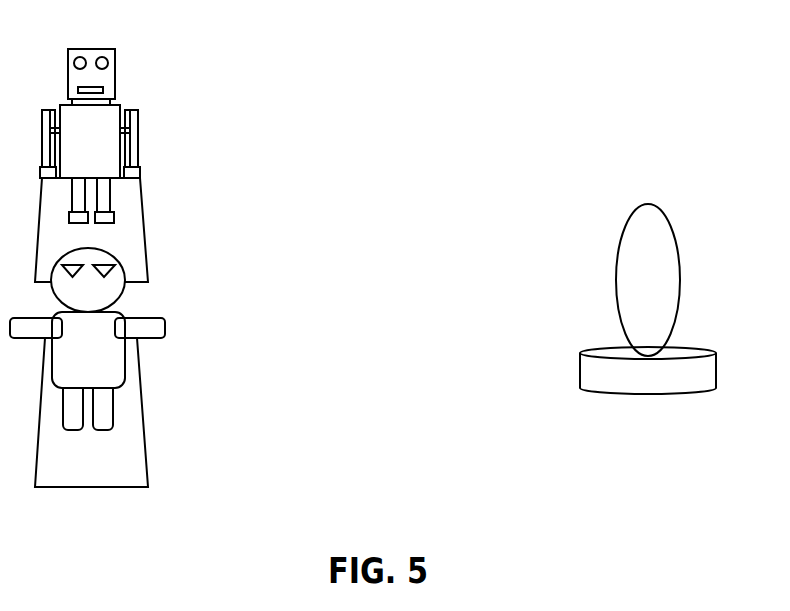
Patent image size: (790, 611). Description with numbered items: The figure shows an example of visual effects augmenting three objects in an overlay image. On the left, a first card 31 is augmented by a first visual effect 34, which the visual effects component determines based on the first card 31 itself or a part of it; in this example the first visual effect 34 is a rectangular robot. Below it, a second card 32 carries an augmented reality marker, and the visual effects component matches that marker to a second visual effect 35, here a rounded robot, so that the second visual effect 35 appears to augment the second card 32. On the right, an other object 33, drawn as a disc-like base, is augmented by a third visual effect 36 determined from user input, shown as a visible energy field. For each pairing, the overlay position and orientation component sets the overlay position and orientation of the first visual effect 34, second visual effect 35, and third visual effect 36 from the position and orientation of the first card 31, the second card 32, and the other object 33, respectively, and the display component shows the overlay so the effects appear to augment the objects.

The first visual effect 34 is at (87, 135).
The first card 31 is at (147, 214).
The second visual effect 35 is at (95, 338).
The second card 32 is at (148, 413).
The third visual effect 36 is at (648, 250).
The other object 33 is at (648, 394).